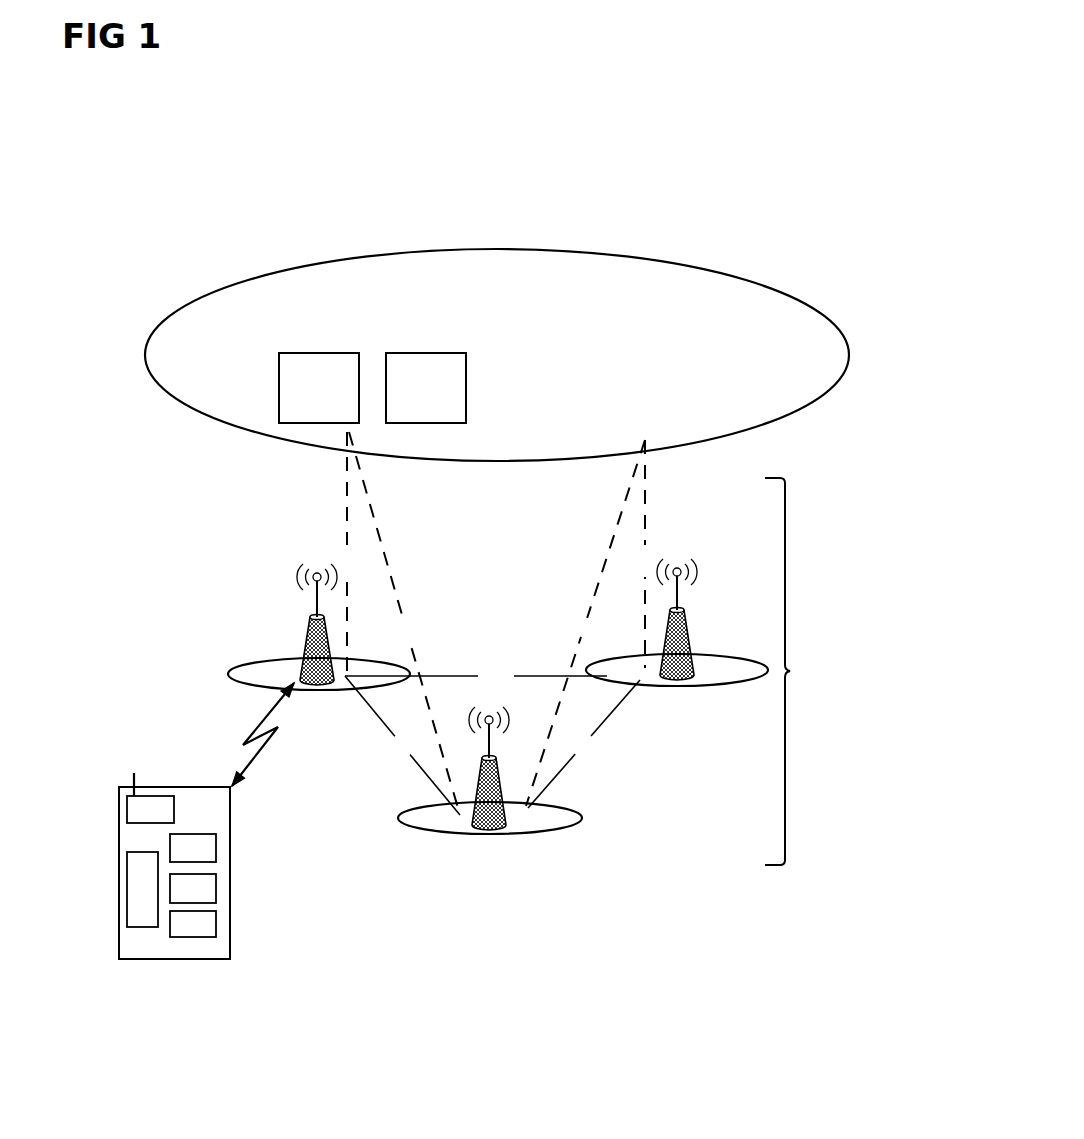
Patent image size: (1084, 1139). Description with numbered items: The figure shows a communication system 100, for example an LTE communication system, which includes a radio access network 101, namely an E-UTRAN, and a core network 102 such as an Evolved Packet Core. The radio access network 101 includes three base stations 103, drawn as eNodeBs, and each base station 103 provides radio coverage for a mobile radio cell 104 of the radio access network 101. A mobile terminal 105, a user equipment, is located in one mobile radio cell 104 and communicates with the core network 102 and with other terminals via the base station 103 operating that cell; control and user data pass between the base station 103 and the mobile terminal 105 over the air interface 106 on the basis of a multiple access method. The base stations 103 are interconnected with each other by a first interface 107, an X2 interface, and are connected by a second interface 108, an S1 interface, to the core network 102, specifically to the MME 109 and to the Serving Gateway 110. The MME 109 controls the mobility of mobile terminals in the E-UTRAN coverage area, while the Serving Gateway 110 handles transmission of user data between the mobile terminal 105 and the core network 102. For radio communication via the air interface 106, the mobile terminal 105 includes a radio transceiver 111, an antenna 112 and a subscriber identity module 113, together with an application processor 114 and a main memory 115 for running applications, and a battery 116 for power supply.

The communication system 100 is at (846, 165).
The radio access network 101 is at (885, 652).
The core network 102 is at (838, 325).
The base station 103 is at (308, 626).
The mobile radio cell 104 is at (243, 673).
The mobile terminal 105 is at (169, 884).
The air interface 106 is at (275, 740).
The first interface 107 is at (393, 760).
The second interface 108 is at (346, 502).
The MME 109 is at (318, 352).
The Serving Gateway 110 is at (427, 352).
The radio transceiver 111 is at (127, 803).
The antenna 112 is at (134, 773).
The subscriber identity module 113 is at (216, 846).
The application processor 114 is at (216, 886).
The main memory 115 is at (216, 920).
The battery 116 is at (127, 882).